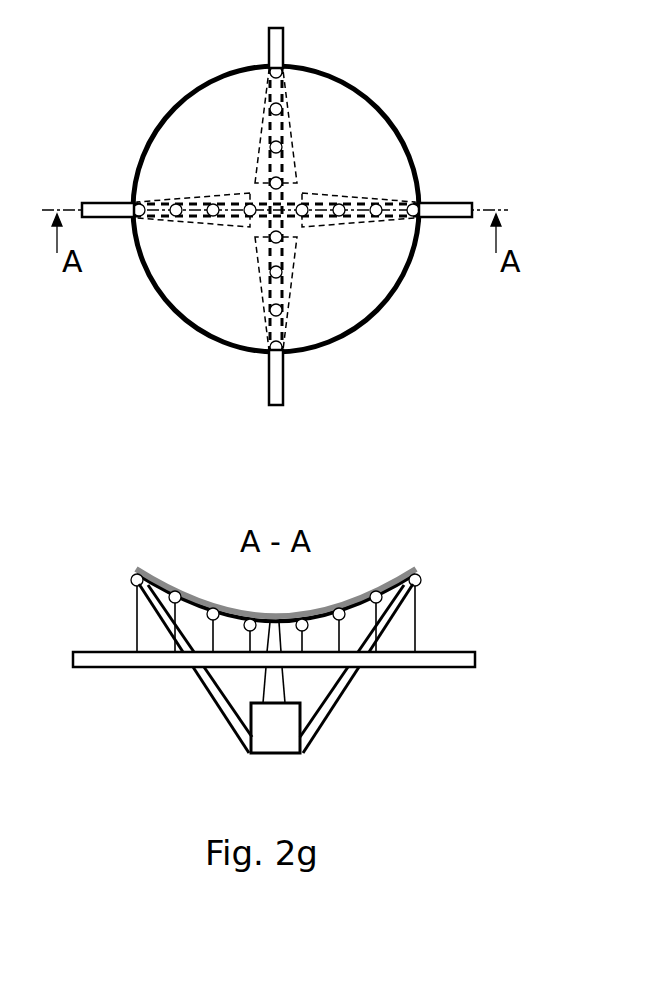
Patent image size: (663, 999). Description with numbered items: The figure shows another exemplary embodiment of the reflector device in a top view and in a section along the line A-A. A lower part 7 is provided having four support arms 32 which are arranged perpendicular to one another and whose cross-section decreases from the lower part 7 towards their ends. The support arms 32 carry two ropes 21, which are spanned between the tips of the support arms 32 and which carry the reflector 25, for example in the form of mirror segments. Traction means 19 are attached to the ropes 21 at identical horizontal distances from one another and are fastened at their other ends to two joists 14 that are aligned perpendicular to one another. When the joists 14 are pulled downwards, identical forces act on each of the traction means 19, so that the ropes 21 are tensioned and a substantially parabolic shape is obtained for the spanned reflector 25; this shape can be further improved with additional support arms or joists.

The joist 14 is at (95, 205).
The reflector 25 is at (350, 297).
The rope 21 is at (390, 590).
The traction means 19 is at (174, 643).
The support arms 32 is at (233, 722).
The lower part 7 is at (312, 761).